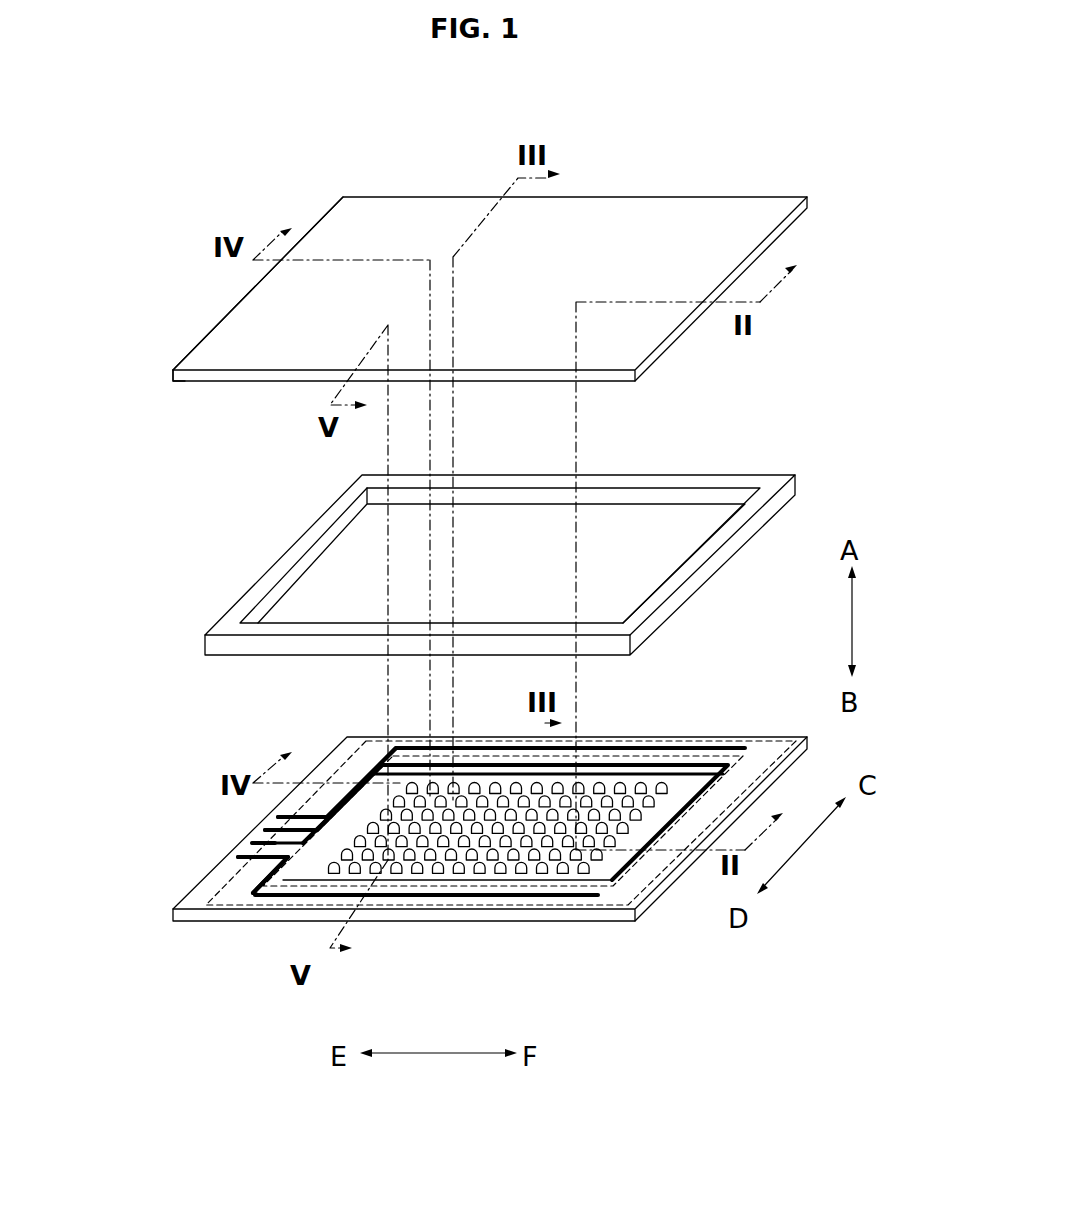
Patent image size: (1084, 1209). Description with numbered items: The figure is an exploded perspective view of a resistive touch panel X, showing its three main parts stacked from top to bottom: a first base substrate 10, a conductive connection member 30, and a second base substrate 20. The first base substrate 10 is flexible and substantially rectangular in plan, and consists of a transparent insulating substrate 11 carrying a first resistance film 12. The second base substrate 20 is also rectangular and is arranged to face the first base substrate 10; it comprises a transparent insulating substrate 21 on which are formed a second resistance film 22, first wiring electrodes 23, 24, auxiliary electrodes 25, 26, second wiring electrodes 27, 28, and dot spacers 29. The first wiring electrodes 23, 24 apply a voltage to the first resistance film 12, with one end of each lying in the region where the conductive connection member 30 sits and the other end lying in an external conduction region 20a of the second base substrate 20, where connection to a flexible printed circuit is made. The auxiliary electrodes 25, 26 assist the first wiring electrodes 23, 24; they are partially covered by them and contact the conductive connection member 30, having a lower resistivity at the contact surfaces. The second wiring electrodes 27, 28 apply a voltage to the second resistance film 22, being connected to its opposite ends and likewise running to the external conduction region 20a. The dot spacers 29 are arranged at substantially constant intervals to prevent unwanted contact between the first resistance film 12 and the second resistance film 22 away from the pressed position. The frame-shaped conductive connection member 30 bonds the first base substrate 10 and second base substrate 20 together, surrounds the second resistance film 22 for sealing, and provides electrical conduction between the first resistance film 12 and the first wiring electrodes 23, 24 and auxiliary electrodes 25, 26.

The touch panel X is at (613, 145).
The first base substrate 10 is at (716, 197).
The transparent insulating substrate 11 is at (223, 340).
The first resistance film 12 is at (184, 384).
The conductive connection member 30 is at (666, 492).
The second base substrate 20 is at (733, 736).
The external conduction region 20a is at (232, 850).
The transparent insulating substrate 21 is at (198, 902).
The second resistance film 22 is at (598, 879).
The first wiring electrode 23 is at (678, 760).
The first wiring electrode 24 is at (448, 897).
The auxiliary electrode 25 is at (650, 744).
The auxiliary electrode 26 is at (384, 897).
The second wiring electrode 27 is at (270, 870).
The second wiring electrode 28 is at (589, 774).
The dot spacers 29 is at (520, 869).